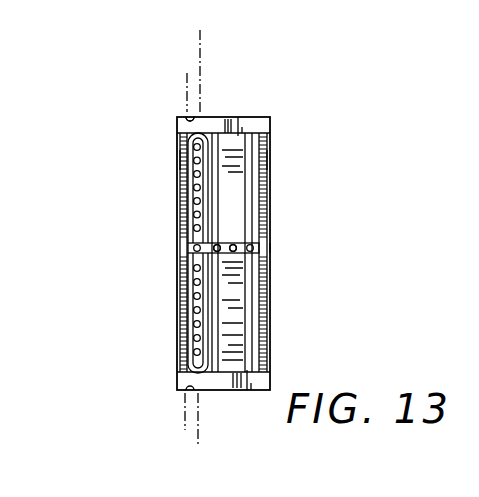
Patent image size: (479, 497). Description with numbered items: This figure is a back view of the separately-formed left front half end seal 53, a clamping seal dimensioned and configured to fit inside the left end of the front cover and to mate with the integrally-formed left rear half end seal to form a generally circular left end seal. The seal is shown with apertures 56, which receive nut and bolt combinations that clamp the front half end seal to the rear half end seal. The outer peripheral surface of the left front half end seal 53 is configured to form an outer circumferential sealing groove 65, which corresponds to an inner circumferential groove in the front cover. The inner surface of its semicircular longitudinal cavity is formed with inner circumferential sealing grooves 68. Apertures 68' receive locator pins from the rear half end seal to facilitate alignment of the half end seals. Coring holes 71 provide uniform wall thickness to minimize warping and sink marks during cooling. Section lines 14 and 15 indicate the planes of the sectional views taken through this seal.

The section line 14- 14 is at (185, 423).
The section line 15- 15 is at (158, 451).
The left front half end seal 53 is at (272, 160).
The apertures 56 is at (233, 246).
The outer circumferential sealing grooves 65 is at (192, 114).
The inner circumferential sealing grooves 68 is at (181, 241).
The apertures 68' is at (309, 219).
The coring holes 71 is at (180, 158).